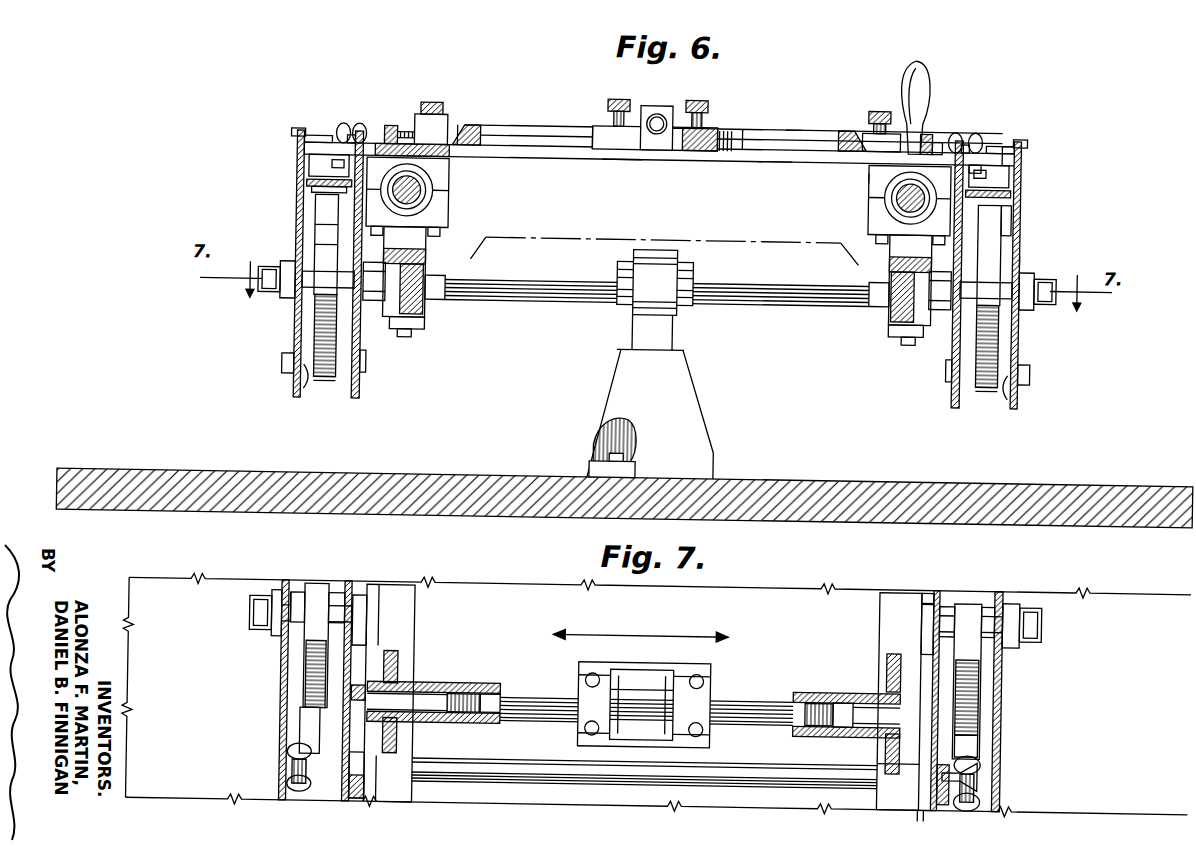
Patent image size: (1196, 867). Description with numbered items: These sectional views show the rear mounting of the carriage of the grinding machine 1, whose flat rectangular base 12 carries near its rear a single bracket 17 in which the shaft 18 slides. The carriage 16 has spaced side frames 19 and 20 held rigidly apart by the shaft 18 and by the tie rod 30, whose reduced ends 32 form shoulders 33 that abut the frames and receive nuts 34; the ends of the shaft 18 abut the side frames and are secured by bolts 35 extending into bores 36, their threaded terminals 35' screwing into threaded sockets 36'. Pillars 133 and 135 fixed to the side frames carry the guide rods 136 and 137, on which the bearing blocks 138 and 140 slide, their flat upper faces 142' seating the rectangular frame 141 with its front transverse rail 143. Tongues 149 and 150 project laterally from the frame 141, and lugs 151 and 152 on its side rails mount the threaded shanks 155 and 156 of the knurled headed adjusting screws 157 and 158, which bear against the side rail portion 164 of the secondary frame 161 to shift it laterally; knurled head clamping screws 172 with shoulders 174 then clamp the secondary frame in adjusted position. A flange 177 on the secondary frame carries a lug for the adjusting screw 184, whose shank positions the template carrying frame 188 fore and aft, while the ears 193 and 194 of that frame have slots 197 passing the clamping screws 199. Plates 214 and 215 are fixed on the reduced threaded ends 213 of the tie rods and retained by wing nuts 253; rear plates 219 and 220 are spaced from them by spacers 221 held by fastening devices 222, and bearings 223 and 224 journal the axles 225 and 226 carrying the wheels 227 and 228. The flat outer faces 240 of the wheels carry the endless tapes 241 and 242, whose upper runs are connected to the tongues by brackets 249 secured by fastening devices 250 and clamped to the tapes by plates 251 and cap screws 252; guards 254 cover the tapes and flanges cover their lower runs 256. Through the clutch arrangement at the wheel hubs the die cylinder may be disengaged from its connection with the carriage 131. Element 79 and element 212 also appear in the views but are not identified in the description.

In FIG. 6, the grinding machine 1 is at (1022, 141).
In FIG. 7, the grinding machine 1 is at (1014, 589).
In FIG. 6, the base 12 is at (898, 478).
In FIG. 7, the base 12 is at (1152, 578).
In FIG. 6, the carriage 16 is at (438, 304).
In FIG. 7, the carriage 16 is at (944, 577).
In FIG. 6, the bracket 17 is at (686, 361).
In FIG. 7, the bracket 17 is at (717, 669).
In FIG. 6, the shaft 18 is at (552, 300).
In FIG. 7, the shaft 18 is at (545, 700).
In FIG. 6, the side frame 19 is at (877, 303).
In FIG. 7, the side frame 19 is at (885, 620).
In FIG. 6, the side frame 20 is at (404, 342).
In FIG. 7, the side frame 20 is at (420, 621).
In FIG. 7, the tie rod 30 is at (796, 750).
In FIG. 7, the reduced end 32 is at (990, 786).
In FIG. 7, the shoulder 33 is at (370, 776).
In FIG. 7, the nut 34 is at (924, 824).
In FIG. 7, the bolt 35 is at (633, 707).
In FIG. 7, the threaded terminal 35' is at (634, 687).
In FIG. 7, the bore 36 is at (656, 693).
In FIG. 7, the threaded socket 36' is at (655, 722).
In FIG. 6, the bracket with bore 79 is at (648, 106).
In FIG. 6, the carriage 131 is at (591, 130).
In FIG. 6, the pillar 133 is at (412, 244).
In FIG. 6, the pillar 135 is at (893, 245).
In FIG. 6, the guide rod 136 is at (431, 194).
In FIG. 6, the guide rod 137 is at (883, 194).
In FIG. 6, the bearing block 138 is at (447, 210).
In FIG. 6, the bearing block 140 is at (869, 213).
In FIG. 6, the frame 141 is at (755, 165).
In FIG. 6, the flat upper face 142' is at (853, 175).
In FIG. 6, the front transverse rail 143 is at (557, 161).
In FIG. 6, the tongue 149 is at (1014, 166).
In FIG. 6, the tongue 150 is at (302, 154).
In FIG. 6, the lug 151 is at (926, 130).
In FIG. 6, the lug 152 is at (417, 128).
In FIG. 6, the threaded shank 155 is at (458, 127).
In FIG. 6, the threaded shank 156 is at (862, 132).
In FIG. 6, the knurled headed adjusting screw 157 is at (940, 138).
In FIG. 6, the knurled headed adjusting screw 158 is at (388, 130).
In FIG. 6, the secondary frame 161 is at (520, 162).
In FIG. 6, the side rail portion 164 is at (494, 134).
In FIG. 6, the knurled head clamping screw 172 is at (432, 106).
In FIG. 6, the shoulder 174 is at (855, 142).
In FIG. 6, the flange 177 is at (624, 161).
In FIG. 6, the knurled headed adjusting screw 184 is at (668, 106).
In FIG. 6, the template carrying frame 188 is at (523, 118).
In FIG. 6, the ear 193 is at (590, 127).
In FIG. 6, the ear 194 is at (750, 133).
In FIG. 6, the slot 197 is at (712, 128).
In FIG. 6, the knurled headed clamping screw 199 is at (615, 100).
In FIG. 6, the lever 212 is at (923, 76).
In FIG. 7, the reduced threaded end 213 is at (990, 770).
In FIG. 6, the plate 214 is at (953, 358).
In FIG. 7, the plate 214 is at (945, 600).
In FIG. 6, the plate 215 is at (360, 400).
In FIG. 7, the plate 215 is at (357, 600).
In FIG. 6, the rear plate 219 is at (1019, 231).
In FIG. 7, the rear plate 219 is at (1008, 692).
In FIG. 6, the rear plate 220 is at (295, 229).
In FIG. 7, the rear plate 220 is at (287, 707).
In FIG. 6, the spacer 221 is at (306, 395).
In FIG. 6, the fastening device 222 is at (283, 369).
In FIG. 6, the bearing 223 is at (285, 270).
In FIG. 7, the bearing 223 is at (267, 637).
In FIG. 6, the bearing 224 is at (400, 333).
In FIG. 7, the bearing 224 is at (372, 633).
In FIG. 6, the axle 225 is at (1019, 254).
In FIG. 7, the axle 225 is at (1010, 606).
In FIG. 6, the axle 226 is at (288, 306).
In FIG. 7, the axle 226 is at (301, 600).
In FIG. 6, the wheel 227 is at (1010, 221).
In FIG. 7, the wheel 227 is at (987, 600).
In FIG. 6, the wheel 228 is at (320, 346).
In FIG. 7, the wheel 228 is at (323, 600).
In FIG. 6, the flat outer face 240 is at (338, 362).
In FIG. 7, the flat outer face 240 is at (987, 712).
In FIG. 6, the endless tape 241 is at (1007, 174).
In FIG. 7, the endless tape 241 is at (987, 737).
In FIG. 6, the endless tape 242 is at (307, 172).
In FIG. 7, the endless tape 242 is at (310, 733).
In FIG. 6, the bracket 249 is at (305, 141).
In FIG. 6, the fastening device 250 is at (347, 128).
In FIG. 6, the plate 251 is at (305, 190).
In FIG. 6, the cap screw 252 is at (310, 198).
In FIG. 7, the wing nut 253 is at (300, 772).
In FIG. 6, the guard 254 is at (289, 138).
In FIG. 6, the lower run 256 is at (340, 385).